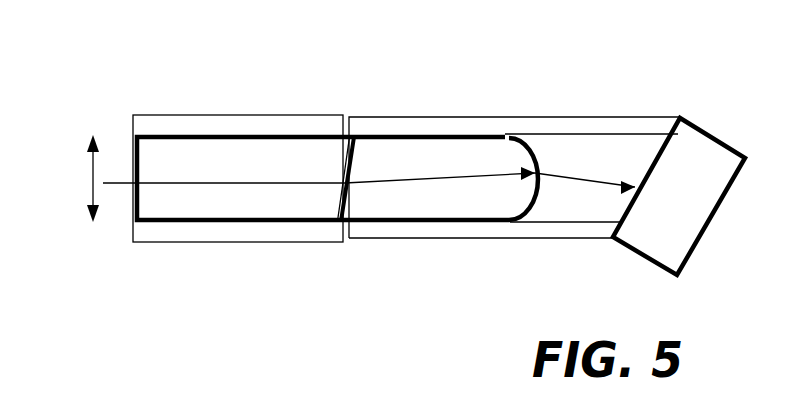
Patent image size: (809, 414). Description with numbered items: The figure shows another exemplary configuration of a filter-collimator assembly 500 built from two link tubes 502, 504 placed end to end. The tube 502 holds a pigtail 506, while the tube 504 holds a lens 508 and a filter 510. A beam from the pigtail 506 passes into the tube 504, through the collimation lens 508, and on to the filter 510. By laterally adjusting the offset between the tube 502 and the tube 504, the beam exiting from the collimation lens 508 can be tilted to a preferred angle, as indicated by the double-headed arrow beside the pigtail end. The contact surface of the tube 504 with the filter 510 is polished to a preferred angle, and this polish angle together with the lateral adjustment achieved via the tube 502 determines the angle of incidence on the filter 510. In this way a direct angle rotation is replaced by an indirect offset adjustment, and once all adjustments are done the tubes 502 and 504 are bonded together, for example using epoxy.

The filter-collimator assembly 500 is at (432, 178).
The link tube 502 is at (202, 123).
The link tube 504 is at (437, 123).
The pigtail 506 is at (203, 193).
The lens 508 is at (400, 188).
The filter 510 is at (670, 190).